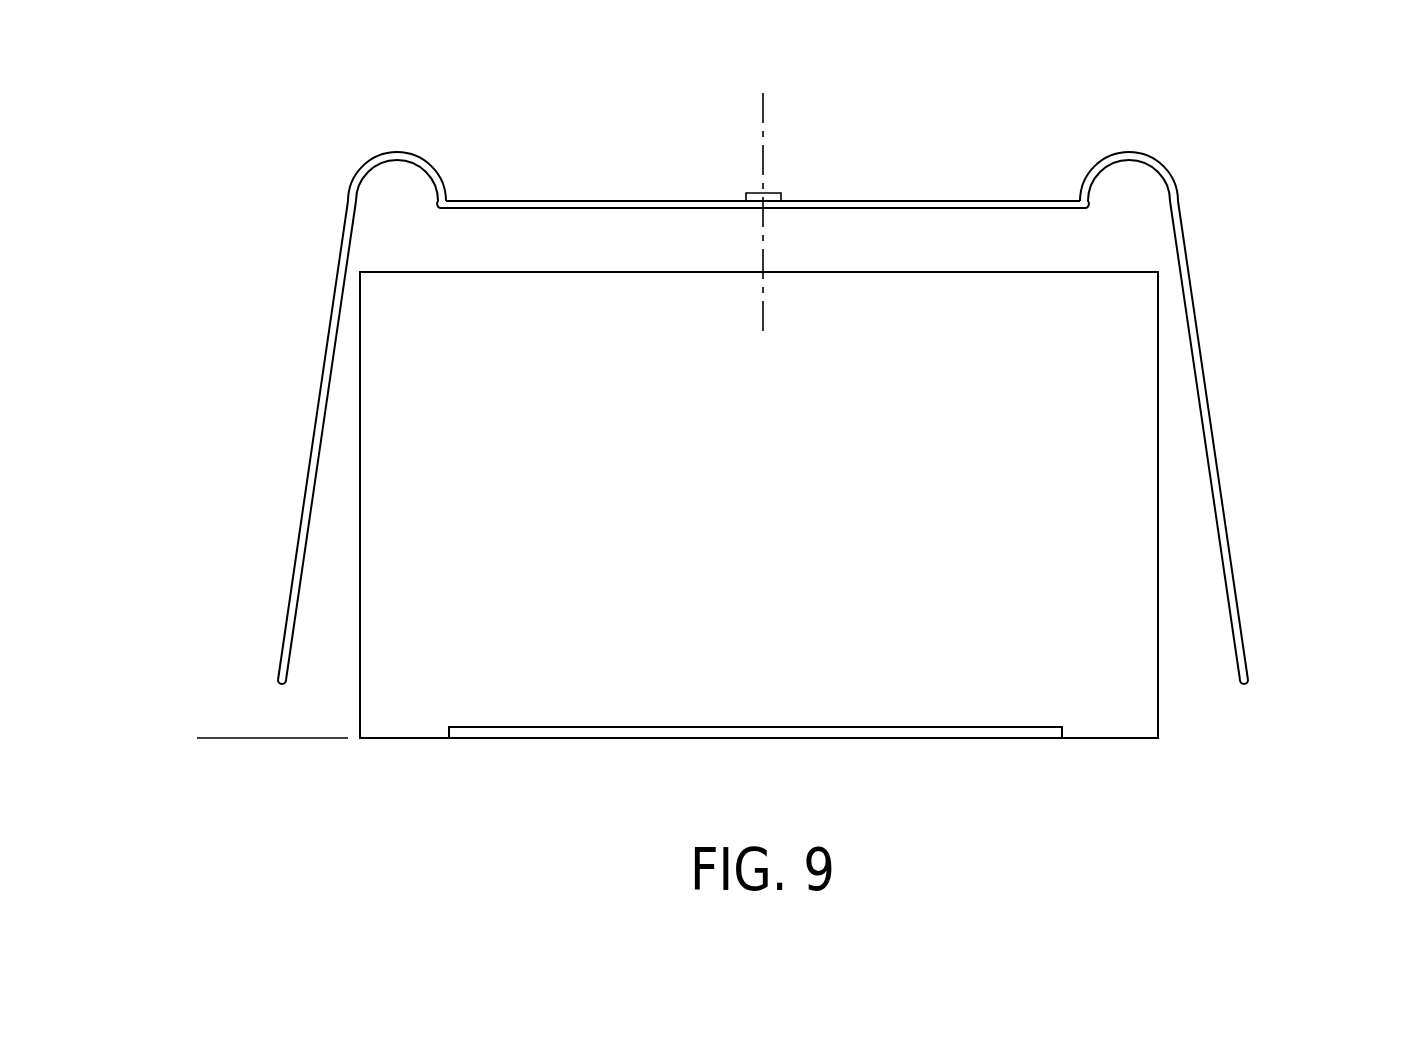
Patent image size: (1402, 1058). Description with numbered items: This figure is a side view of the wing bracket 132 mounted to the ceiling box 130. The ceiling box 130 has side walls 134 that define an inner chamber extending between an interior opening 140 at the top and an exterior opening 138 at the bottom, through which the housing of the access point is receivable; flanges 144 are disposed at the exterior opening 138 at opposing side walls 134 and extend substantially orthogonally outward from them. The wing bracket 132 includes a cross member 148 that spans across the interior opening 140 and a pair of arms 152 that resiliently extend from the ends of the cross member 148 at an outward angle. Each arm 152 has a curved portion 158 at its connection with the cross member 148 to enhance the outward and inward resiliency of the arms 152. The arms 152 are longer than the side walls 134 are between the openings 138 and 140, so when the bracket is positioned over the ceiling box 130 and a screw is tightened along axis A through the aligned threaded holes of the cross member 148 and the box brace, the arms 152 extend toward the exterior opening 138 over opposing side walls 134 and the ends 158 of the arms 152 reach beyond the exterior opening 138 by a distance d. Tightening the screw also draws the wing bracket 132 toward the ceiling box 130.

The ceiling box 130 is at (494, 801).
The wing bracket 132 is at (768, 402).
The side walls 134 is at (763, 493).
The exterior opening 138 is at (1103, 740).
The interior opening 140 is at (1103, 272).
The flanges 144 is at (793, 738).
The cross member 148 is at (547, 200).
The arms 152 is at (307, 478).
The ends of the arms / curved portion 158 is at (374, 160).
The axis A is at (765, 132).
The distance d is at (229, 865).